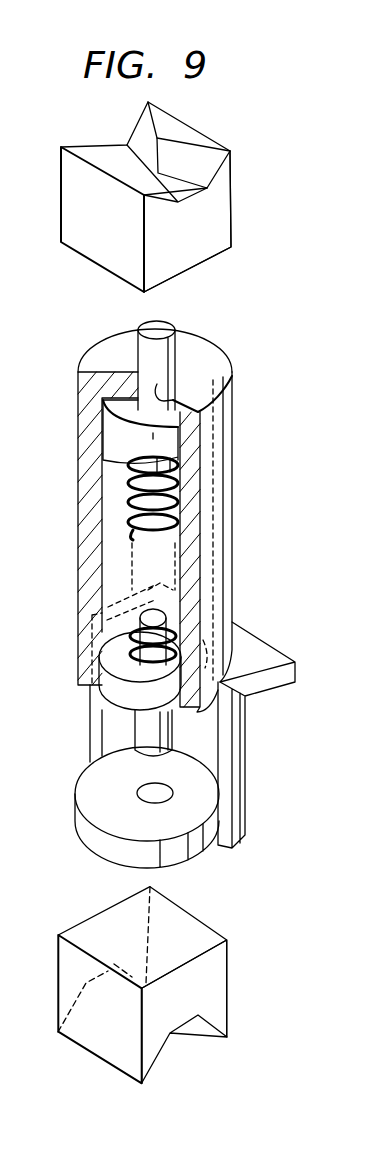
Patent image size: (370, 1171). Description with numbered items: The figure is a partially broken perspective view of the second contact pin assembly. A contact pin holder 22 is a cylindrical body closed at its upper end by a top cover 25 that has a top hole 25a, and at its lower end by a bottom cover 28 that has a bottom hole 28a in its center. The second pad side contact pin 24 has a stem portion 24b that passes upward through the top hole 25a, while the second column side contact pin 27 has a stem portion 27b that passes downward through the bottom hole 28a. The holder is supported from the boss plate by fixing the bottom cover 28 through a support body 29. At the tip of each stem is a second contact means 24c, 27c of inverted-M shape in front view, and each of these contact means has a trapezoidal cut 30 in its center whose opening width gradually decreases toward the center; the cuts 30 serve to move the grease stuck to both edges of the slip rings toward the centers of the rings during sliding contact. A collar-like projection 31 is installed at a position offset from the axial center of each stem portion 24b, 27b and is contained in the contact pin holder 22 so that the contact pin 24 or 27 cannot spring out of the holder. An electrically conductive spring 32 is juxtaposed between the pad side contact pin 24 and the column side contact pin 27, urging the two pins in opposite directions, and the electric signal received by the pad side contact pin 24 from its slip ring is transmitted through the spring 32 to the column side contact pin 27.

The contact pin holder 22 is at (231, 520).
The second pad side contact pin 24 is at (184, 197).
The stem portion 24b is at (180, 353).
The second contact means 24c is at (231, 178).
The top cover 25 is at (228, 363).
The top hole 25a is at (173, 387).
The second column side contact pin 27 is at (178, 985).
The stem portion 27b is at (143, 747).
The second contact means 27c is at (228, 995).
The bottom cover 28 is at (93, 837).
The bottom hole 28a is at (160, 798).
The support body 29 is at (278, 683).
The trapezoidal cut 30 is at (190, 187).
The collar-like projection 31 is at (117, 435).
The electrically conductive spring 32 is at (200, 488).